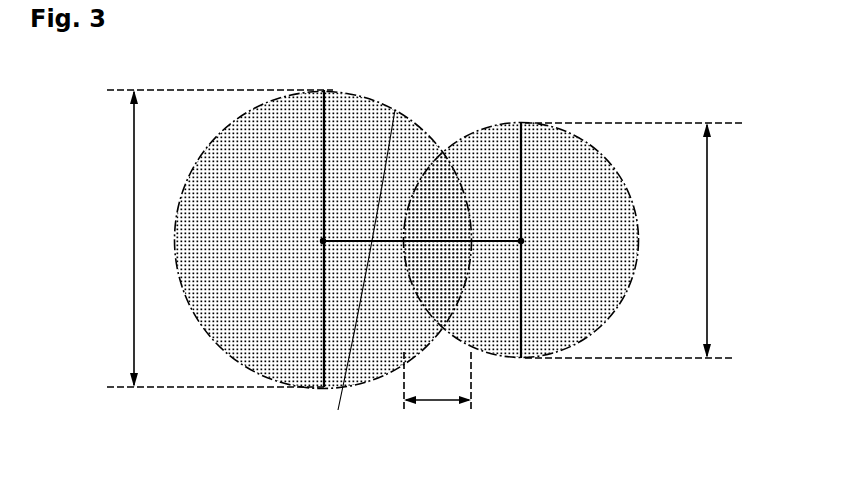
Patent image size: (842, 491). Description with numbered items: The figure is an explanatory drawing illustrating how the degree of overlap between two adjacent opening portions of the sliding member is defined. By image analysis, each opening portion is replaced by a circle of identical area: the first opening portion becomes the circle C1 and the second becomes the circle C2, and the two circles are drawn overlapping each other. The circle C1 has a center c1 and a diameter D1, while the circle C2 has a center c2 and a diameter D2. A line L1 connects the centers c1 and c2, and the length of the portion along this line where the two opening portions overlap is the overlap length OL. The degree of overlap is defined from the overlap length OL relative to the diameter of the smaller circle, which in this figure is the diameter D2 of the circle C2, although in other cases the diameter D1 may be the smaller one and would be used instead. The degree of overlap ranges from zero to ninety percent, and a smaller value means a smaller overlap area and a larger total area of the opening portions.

The circle C1 is at (397, 111).
The circle C2 is at (493, 127).
The center c1 is at (404, 241).
The center c2 is at (534, 246).
The diameter D1 is at (214, 238).
The diameter D2 is at (634, 240).
The overlap length OL is at (437, 382).
The line L1 is at (359, 275).